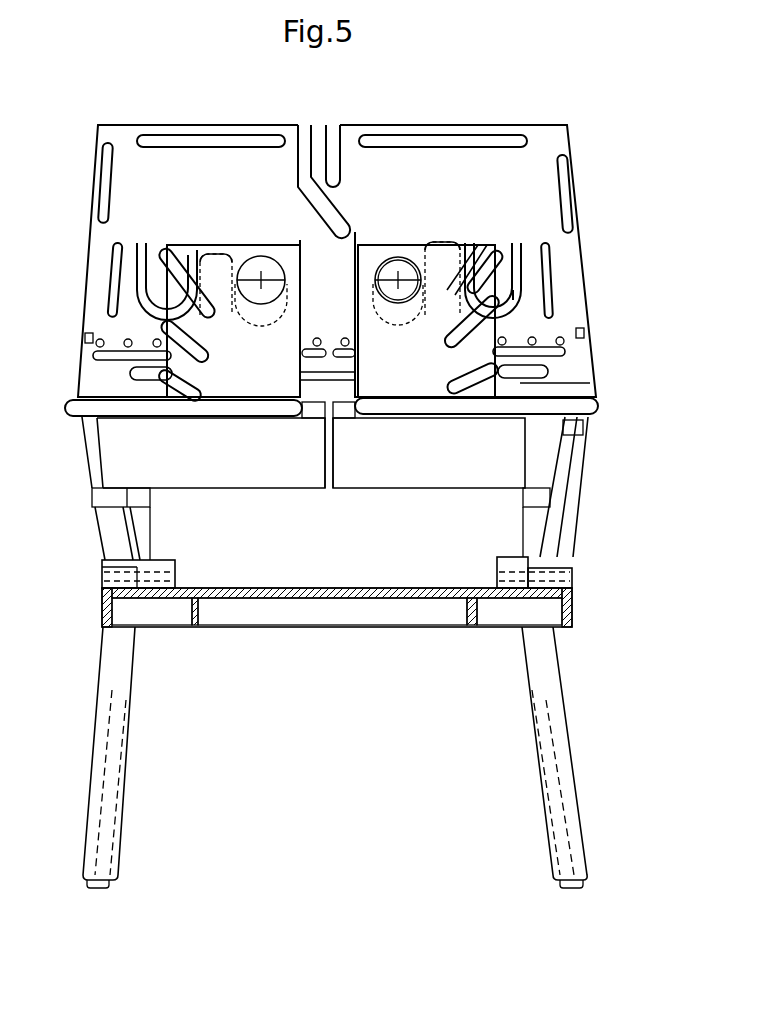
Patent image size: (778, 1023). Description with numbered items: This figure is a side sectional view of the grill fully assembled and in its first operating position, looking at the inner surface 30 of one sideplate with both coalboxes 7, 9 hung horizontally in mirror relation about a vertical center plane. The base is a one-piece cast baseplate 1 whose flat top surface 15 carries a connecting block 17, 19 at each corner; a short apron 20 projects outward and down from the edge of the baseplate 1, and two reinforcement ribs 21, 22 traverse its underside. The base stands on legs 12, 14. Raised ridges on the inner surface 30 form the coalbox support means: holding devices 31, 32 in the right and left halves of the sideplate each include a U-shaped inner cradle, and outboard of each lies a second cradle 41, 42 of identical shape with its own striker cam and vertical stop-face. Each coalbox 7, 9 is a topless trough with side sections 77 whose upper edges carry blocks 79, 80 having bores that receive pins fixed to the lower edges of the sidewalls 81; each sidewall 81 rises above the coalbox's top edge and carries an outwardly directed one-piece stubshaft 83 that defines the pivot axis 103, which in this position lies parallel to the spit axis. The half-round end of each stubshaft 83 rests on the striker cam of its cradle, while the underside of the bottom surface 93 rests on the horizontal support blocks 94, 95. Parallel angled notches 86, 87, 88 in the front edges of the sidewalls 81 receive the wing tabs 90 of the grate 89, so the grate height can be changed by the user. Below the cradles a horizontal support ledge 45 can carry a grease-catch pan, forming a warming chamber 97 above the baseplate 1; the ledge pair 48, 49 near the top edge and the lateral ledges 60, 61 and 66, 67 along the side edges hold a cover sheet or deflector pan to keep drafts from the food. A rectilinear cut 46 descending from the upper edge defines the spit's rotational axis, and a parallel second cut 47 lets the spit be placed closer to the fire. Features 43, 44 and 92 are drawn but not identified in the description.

The baseplate 1 is at (337, 629).
The coalbox 7 is at (605, 435).
The coalbox 9 is at (72, 456).
The leg 12 is at (535, 688).
The leg 14 is at (140, 686).
The top surface 15 is at (346, 596).
The connecting block 17 is at (565, 581).
The connecting block 19 is at (105, 572).
The apron 20 is at (105, 607).
The reinforcement rib 21 is at (206, 626).
The reinforcement rib 22 is at (470, 626).
The inner surface 30 is at (537, 142).
The holding device 31 is at (442, 215).
The holding device 32 is at (258, 212).
The second cradle 41 is at (517, 282).
The second cradle 42 is at (140, 300).
The hook arm 43 is at (527, 302).
The left diagonal strip 44 is at (185, 275).
The horizontal support ledge 45 is at (553, 384).
The rectilinear cut 46 is at (334, 126).
The second cut 47 is at (307, 126).
The ledge 48 is at (218, 137).
The ledge 49 is at (468, 135).
The lateral ledge 60 is at (110, 146).
The lateral ledge 61 is at (113, 275).
The lateral ledge 66 is at (545, 262).
The lateral ledge 67 is at (563, 162).
The side section 77 is at (558, 462).
The block 79 is at (512, 418).
The block 80 is at (345, 420).
The sidewall 81 is at (482, 248).
The stubshaft 83 is at (398, 262).
The angled notch 86 is at (548, 364).
The angled notch 87 is at (552, 320).
The angled notch 88 is at (497, 260).
The grate 89 is at (568, 348).
The wing tab 90 is at (455, 338).
The right panel 92 is at (487, 490).
The bottom surface 93 is at (205, 490).
The support block 94 is at (545, 497).
The support block 95 is at (135, 497).
The warming chamber 97 is at (293, 545).
The pivot axis 103 is at (261, 280).